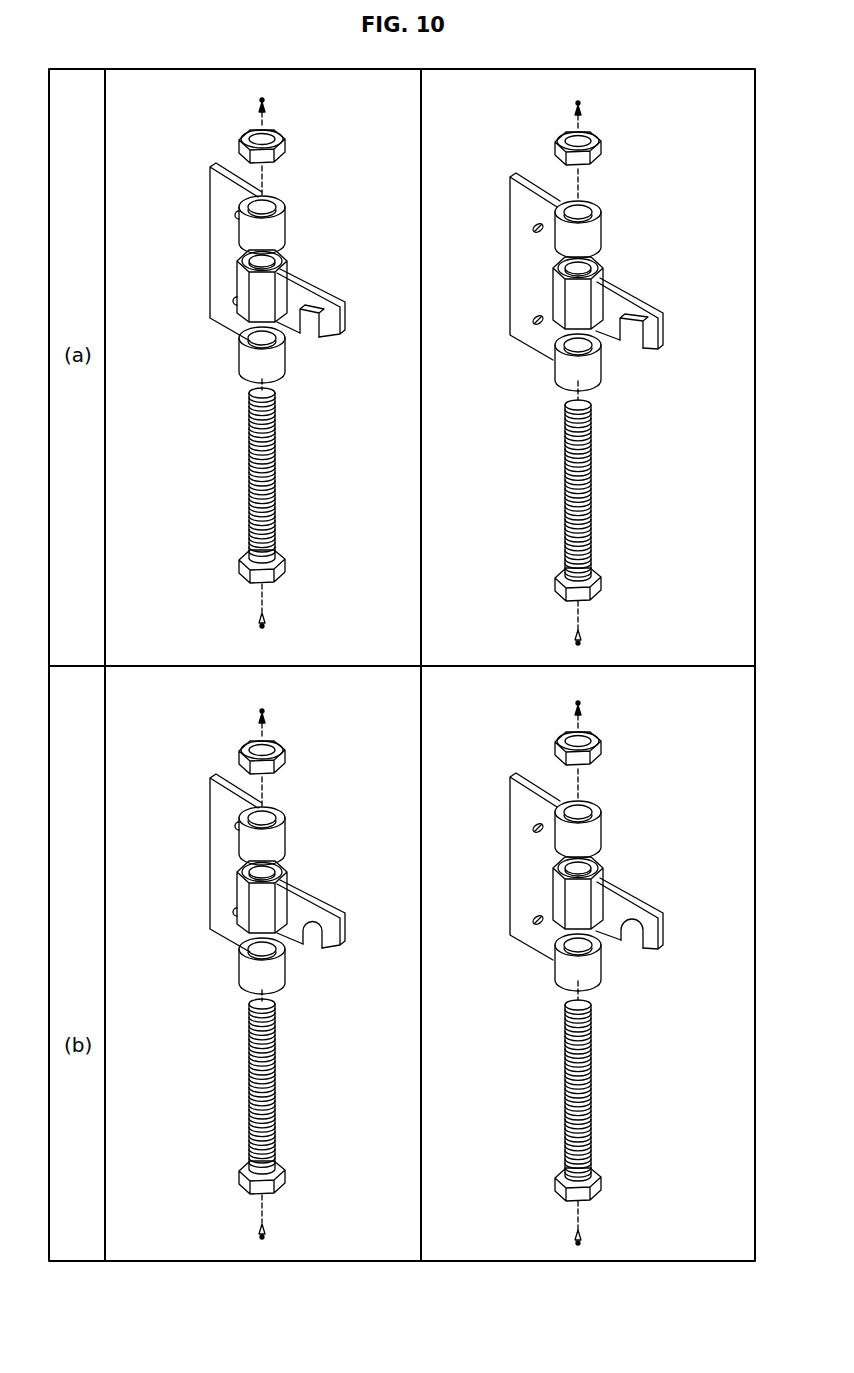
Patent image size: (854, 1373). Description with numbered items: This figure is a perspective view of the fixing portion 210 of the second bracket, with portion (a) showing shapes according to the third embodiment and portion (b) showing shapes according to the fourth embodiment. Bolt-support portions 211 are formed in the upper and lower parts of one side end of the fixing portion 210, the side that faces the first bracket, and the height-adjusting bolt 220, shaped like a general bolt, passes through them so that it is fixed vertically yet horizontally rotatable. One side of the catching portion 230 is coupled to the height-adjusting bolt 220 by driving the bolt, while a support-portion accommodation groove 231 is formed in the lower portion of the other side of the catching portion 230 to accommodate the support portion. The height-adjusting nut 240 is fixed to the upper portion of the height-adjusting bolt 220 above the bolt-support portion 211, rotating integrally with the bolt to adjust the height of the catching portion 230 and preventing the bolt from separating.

The fixing portion 210 is at (218, 250).
The bolt-support portion 211 is at (274, 229).
The height-adjusting bolt 220 is at (276, 466).
The catching portion 230 is at (297, 292).
The support-portion accommodation groove 231 is at (316, 330).
The height-adjusting nut 240 is at (284, 130).